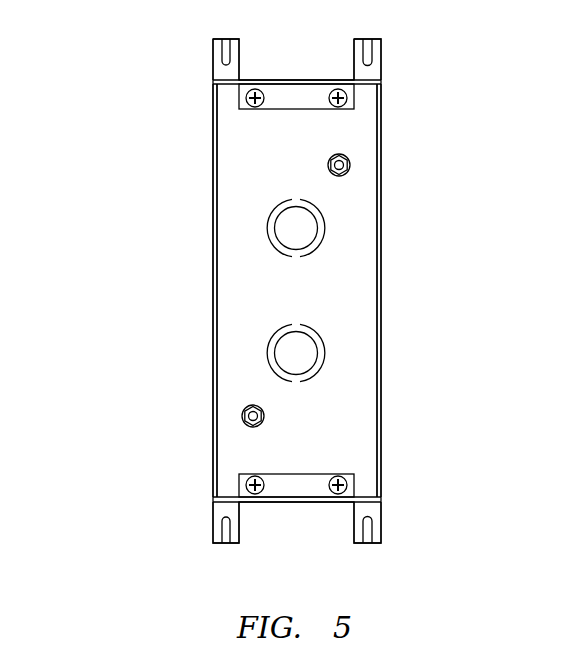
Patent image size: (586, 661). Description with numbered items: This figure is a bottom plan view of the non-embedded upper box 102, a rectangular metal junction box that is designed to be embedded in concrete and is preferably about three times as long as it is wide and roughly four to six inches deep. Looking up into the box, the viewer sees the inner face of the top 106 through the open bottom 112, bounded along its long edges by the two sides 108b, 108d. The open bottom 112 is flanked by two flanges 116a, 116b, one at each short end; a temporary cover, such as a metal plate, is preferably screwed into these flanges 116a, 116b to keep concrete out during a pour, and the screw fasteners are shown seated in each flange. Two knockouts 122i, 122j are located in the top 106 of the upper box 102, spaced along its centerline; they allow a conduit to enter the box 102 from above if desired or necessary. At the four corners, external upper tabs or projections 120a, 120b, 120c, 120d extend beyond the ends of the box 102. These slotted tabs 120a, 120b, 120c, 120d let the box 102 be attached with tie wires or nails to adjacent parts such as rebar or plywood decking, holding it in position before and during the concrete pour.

The upper box 102 is at (401, 201).
The top 106 is at (272, 177).
The side 108b is at (389, 283).
The side 108d is at (199, 309).
The open bottom 112 is at (344, 329).
The flange 116a is at (298, 98).
The flange 116b is at (301, 488).
The external upper tab 120a is at (213, 65).
The external upper tab 120b is at (381, 60).
The external upper tab 120c is at (378, 527).
The external upper tab 120d is at (213, 535).
The knockout 122i is at (290, 226).
The knockout 122j is at (292, 358).